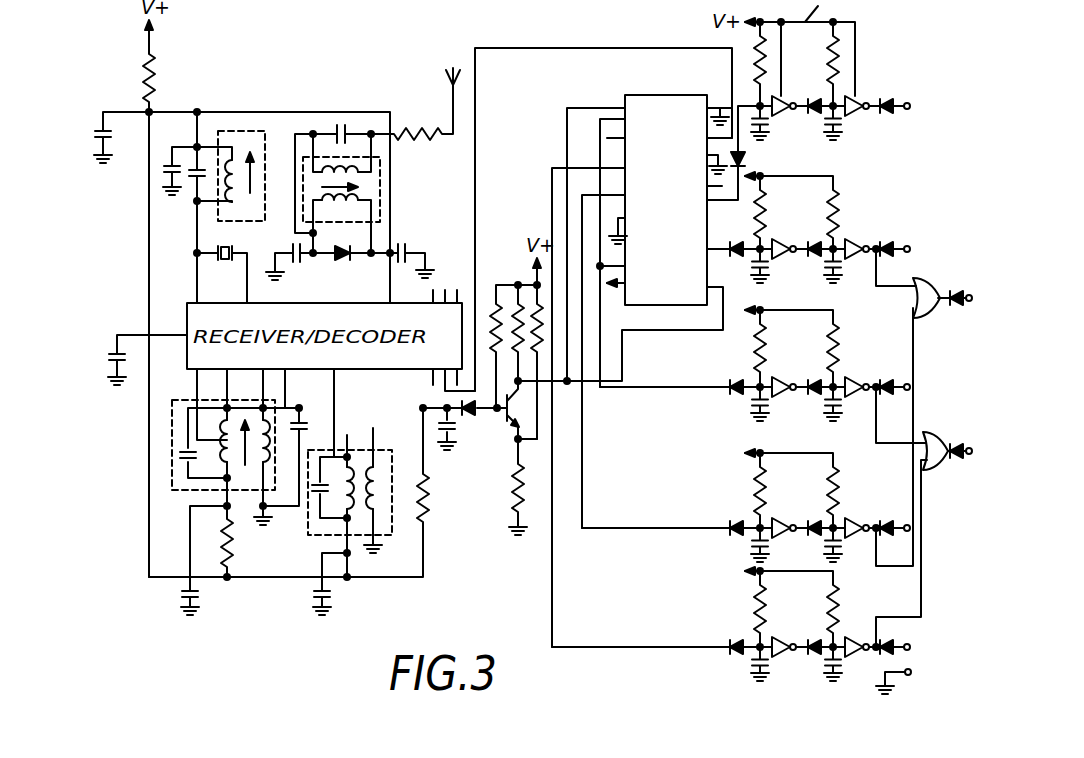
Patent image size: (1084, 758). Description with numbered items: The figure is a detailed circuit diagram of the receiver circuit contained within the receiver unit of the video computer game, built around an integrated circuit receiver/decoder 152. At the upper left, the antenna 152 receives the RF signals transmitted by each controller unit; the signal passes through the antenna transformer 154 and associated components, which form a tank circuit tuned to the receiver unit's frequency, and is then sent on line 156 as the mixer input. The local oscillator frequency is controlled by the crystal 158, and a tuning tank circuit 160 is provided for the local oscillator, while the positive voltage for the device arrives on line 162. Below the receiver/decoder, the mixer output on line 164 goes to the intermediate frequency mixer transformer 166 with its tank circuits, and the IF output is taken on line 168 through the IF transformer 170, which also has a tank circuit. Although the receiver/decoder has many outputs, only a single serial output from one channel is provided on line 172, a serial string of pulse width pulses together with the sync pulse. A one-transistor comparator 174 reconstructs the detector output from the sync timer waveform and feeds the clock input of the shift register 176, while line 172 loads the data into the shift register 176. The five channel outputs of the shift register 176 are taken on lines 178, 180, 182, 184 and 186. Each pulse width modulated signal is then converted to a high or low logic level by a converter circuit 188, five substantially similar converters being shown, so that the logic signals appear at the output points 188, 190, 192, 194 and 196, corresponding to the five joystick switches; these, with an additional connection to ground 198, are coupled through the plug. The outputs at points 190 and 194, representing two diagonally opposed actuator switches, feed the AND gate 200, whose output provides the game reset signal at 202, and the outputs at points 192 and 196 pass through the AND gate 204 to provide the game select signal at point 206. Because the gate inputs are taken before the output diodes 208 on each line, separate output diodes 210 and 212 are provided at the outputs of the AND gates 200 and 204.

The antenna 152 is at (445, 78).
The antenna transformer 154 is at (383, 183).
The line 156 is at (371, 284).
The crystal 158 is at (218, 248).
The tuning tank circuit 160 is at (232, 118).
The line 162 is at (145, 63).
The line 164 is at (176, 398).
The intermediate frequency mixer transformer 166 is at (182, 495).
The line 168 is at (336, 411).
The IF transformer 170 is at (398, 535).
The line 172 is at (553, 44).
The comparator 174 is at (488, 428).
The shift register 176 is at (651, 95).
The line 178 is at (718, 206).
The line 180 is at (731, 247).
The line 182 is at (645, 393).
The line 184 is at (635, 533).
The line 186 is at (625, 652).
The converter circuit 188 is at (905, 110).
The output point 190 is at (905, 245).
The output point 192 is at (905, 382).
The output point 194 is at (907, 524).
The output point 196 is at (910, 647).
The ground connection 198 is at (911, 672).
The AND gate 200 is at (908, 407).
The game reset signal output 202 is at (967, 294).
The AND gate 204 is at (915, 517).
The game select signal point 206 is at (967, 448).
The output diode 208 is at (887, 100).
The output diode 210 is at (957, 306).
The output diode 212 is at (960, 462).